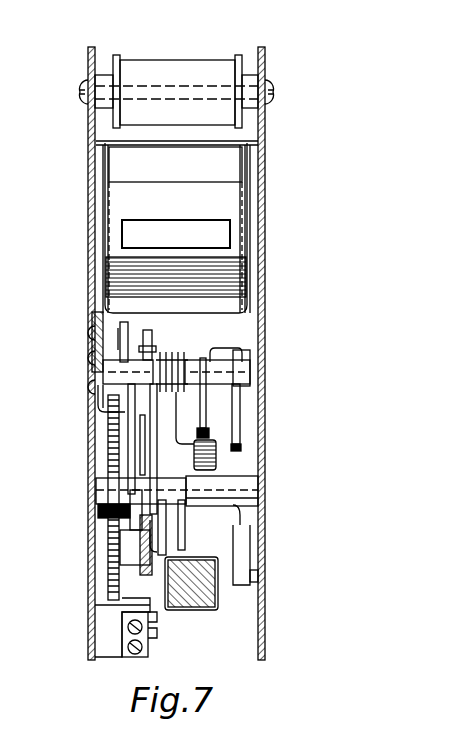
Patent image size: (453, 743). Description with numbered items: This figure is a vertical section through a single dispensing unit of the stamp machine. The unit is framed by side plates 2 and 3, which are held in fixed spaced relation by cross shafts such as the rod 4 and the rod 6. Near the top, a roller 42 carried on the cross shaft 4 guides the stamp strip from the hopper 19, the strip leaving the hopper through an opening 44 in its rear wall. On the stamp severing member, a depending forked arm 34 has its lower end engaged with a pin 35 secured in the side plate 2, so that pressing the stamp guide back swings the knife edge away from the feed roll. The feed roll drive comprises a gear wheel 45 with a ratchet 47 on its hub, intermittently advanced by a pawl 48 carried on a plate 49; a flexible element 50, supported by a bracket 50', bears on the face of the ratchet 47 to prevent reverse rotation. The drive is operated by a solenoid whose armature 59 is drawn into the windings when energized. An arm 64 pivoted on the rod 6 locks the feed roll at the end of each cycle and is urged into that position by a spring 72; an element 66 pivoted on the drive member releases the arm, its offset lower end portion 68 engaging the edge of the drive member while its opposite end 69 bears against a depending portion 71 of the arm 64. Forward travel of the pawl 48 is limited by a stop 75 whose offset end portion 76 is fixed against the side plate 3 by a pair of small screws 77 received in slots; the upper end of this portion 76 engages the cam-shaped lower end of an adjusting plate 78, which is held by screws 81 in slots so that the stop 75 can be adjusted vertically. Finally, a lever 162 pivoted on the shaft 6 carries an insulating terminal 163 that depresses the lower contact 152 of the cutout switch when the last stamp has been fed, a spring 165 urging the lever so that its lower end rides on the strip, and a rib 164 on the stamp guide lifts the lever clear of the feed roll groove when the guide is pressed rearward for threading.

The side plate 2 is at (265, 243).
The side plate 3 is at (96, 255).
The cross shaft 4 is at (176, 86).
The cross shaft 6 is at (240, 370).
The hopper 19 is at (240, 190).
The forked arm 34 is at (245, 545).
The pin 35 is at (262, 586).
The roller 42 is at (208, 70).
The opening 44 is at (226, 230).
The gear wheel 45 is at (114, 560).
The ratchet 47 is at (100, 476).
The pawl 48 is at (118, 536).
The plate 49 is at (130, 572).
The flexible element 50 is at (97, 627).
The bracket 50' is at (99, 634).
The armature 59 is at (200, 600).
The arm 64 is at (244, 446).
The element 66 is at (245, 488).
The lower end portion 68 is at (185, 530).
The opposite end 69 is at (240, 465).
The depending portion 71 is at (206, 430).
The spring 72 is at (226, 352).
The stop 75 is at (108, 440).
The offset end portion 76 is at (90, 405).
The screws 77 is at (86, 387).
The adjusting plate 78 is at (92, 318).
The screws 81 is at (86, 336).
The lower contact 152 is at (130, 322).
The lever 162 is at (105, 424).
The terminal 163 is at (150, 330).
The rib 164 is at (265, 398).
The spring 165 is at (187, 350).